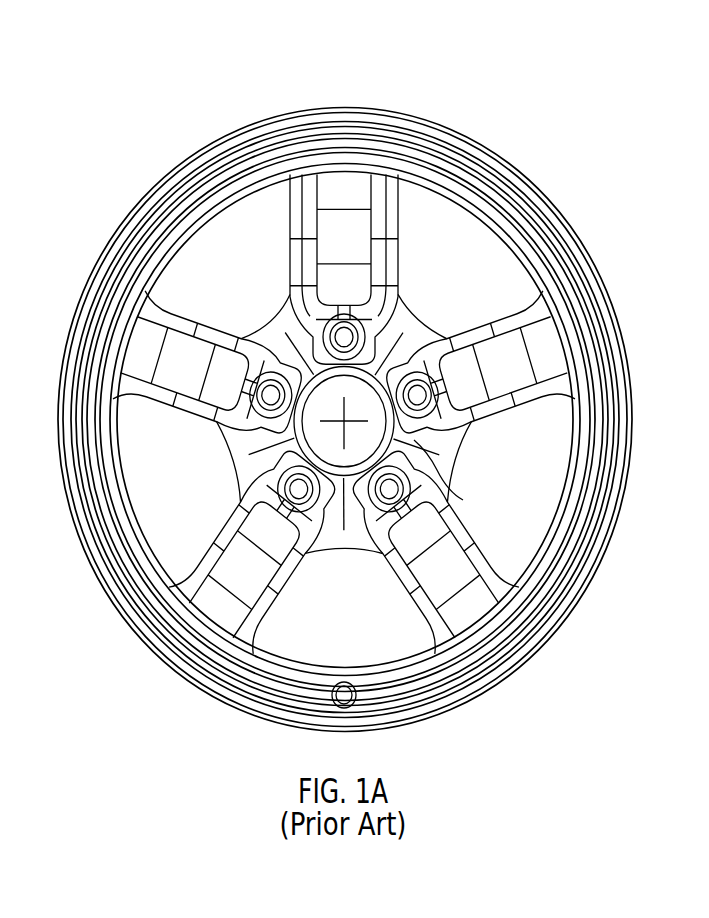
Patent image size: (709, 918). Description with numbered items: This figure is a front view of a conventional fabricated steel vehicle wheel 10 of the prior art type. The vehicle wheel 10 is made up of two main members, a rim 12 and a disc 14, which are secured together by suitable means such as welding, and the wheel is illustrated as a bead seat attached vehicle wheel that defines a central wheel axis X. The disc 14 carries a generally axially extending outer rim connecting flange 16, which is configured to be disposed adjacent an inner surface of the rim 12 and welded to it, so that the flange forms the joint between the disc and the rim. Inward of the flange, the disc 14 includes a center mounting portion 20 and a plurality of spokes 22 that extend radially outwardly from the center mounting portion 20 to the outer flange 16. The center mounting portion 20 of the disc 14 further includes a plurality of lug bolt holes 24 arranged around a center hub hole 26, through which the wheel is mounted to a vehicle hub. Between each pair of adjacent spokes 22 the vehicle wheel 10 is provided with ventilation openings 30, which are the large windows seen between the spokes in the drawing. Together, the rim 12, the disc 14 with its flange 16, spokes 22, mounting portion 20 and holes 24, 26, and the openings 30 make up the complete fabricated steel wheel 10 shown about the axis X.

The vehicle wheel 10 is at (358, 407).
The rim 12 is at (592, 256).
The disc 14 is at (497, 558).
The outer rim connecting flange 16 is at (228, 213).
The center mounting portion 20 is at (398, 308).
The spokes 22 is at (176, 352).
The lug bolt holes 24 is at (238, 511).
The center hub hole 26 is at (232, 470).
The ventilation openings 30 is at (302, 662).
The wheel axis X is at (463, 500).